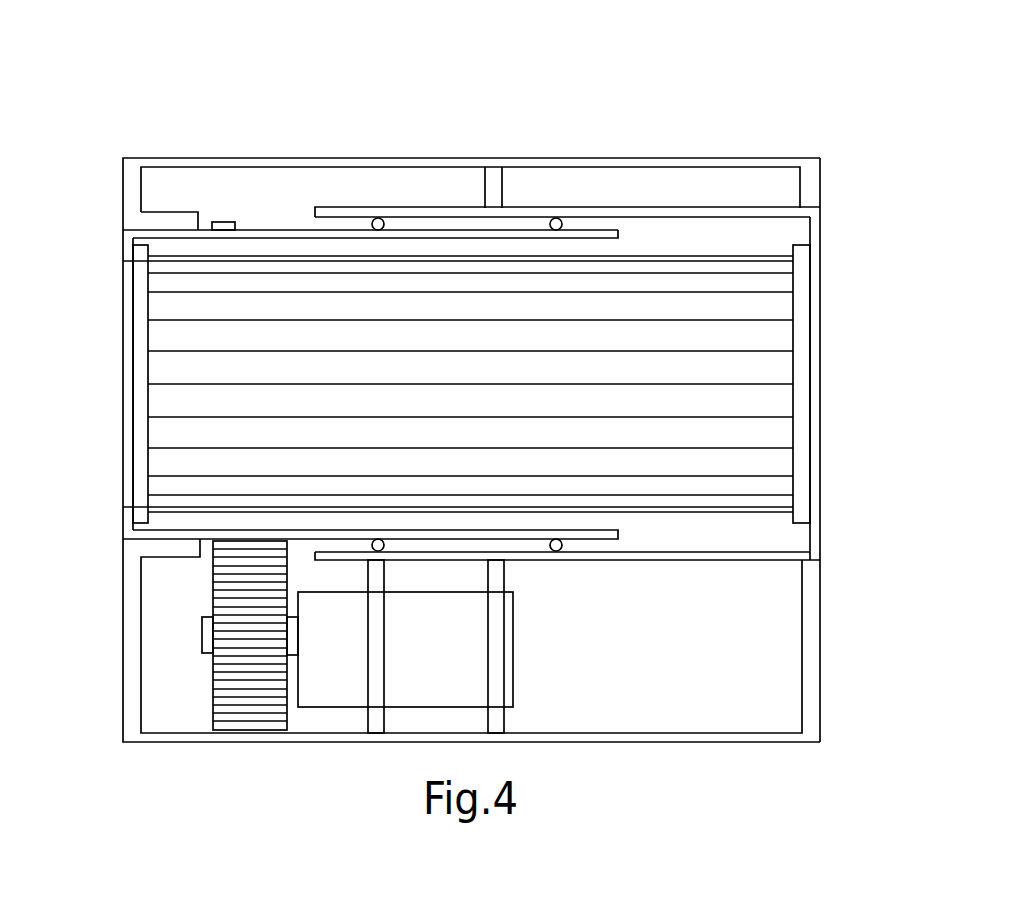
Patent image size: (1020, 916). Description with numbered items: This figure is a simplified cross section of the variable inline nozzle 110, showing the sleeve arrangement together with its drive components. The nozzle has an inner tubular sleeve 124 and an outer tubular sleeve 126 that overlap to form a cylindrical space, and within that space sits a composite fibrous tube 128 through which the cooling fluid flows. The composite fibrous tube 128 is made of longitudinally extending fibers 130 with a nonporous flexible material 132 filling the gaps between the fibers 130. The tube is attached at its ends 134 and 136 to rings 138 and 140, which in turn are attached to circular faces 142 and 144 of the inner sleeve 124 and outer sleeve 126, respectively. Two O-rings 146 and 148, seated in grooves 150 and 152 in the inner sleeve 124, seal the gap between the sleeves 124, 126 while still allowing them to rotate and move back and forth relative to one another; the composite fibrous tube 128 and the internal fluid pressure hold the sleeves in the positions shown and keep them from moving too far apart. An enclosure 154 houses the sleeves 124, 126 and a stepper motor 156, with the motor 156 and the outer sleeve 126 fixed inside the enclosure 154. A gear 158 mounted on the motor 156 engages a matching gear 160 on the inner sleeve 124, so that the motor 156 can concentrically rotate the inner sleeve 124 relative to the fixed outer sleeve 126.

The variable inline nozzle 110 is at (297, 82).
The inner tubular sleeve 124 is at (281, 218).
The outer tubular sleeve 126 is at (633, 196).
The composite fibrous tube 128 is at (675, 497).
The longitudinally extending fibers 130 is at (612, 448).
The nonporous flexible material 132 is at (750, 435).
The end of composite fibrous tube 134 is at (150, 410).
The end of composite fibrous tube 136 is at (795, 430).
The ring 138 is at (140, 380).
The ring 140 is at (802, 403).
The circular face 142 is at (128, 343).
The circular face 144 is at (817, 369).
The O-ring 146 is at (376, 219).
The O-ring 148 is at (558, 219).
The groove 150 is at (381, 219).
The groove 152 is at (554, 219).
The enclosure 154 is at (723, 163).
The stepper motor 156 is at (467, 668).
The gear 158 is at (252, 710).
The matching gear 160 is at (222, 221).